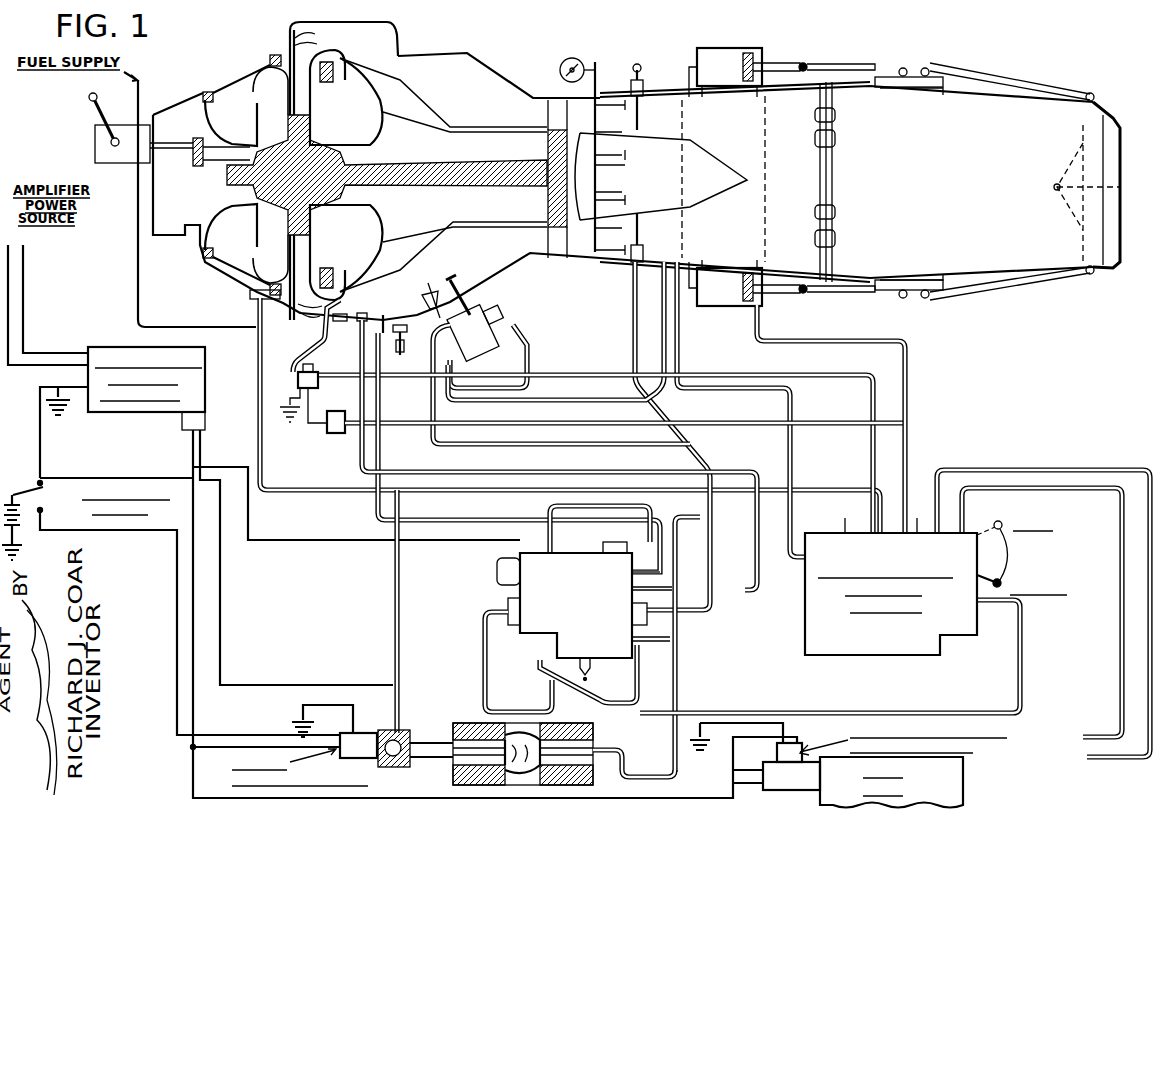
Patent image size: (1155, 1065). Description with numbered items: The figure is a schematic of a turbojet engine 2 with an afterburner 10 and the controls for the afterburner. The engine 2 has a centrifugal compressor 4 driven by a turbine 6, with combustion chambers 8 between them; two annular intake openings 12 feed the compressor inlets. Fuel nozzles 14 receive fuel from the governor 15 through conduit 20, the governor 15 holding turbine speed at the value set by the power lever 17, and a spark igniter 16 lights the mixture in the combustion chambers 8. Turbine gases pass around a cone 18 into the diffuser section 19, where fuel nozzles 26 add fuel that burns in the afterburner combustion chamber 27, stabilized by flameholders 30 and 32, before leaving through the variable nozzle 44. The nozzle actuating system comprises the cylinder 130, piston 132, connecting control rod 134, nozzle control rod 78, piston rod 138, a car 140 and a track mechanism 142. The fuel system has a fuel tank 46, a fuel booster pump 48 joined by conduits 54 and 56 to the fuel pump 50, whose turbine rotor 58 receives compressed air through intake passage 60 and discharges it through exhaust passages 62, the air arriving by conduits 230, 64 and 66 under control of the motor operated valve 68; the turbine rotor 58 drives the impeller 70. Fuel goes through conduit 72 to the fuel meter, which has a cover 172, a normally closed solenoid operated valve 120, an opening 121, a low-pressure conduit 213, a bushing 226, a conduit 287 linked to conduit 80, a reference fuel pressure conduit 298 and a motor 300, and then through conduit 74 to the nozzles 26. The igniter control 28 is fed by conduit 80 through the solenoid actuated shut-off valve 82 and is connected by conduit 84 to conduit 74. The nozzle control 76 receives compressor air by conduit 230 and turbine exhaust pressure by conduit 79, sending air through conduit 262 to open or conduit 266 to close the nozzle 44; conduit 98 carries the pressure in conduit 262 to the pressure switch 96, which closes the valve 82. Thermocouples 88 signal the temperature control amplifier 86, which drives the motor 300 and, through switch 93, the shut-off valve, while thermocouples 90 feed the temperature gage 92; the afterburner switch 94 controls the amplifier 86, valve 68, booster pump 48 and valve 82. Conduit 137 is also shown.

The turbojet engine 2 is at (143, 234).
The compressor 4 is at (240, 180).
The turbine 6 is at (546, 150).
The combustion chambers 8 is at (470, 55).
The afterburner 10 is at (662, 87).
The annular intake openings 12 is at (235, 72).
The fuel nozzles 14 is at (350, 297).
The governor 15 is at (97, 145).
The spark igniter 16 is at (432, 290).
The power lever 17 is at (95, 113).
The cone 18 is at (715, 150).
The diffuser section 19 is at (720, 214).
The conduit 20 is at (137, 270).
The fuel nozzles 26 is at (644, 100).
The afterburner combustion chamber 27 is at (925, 175).
The igniter control 28 is at (495, 305).
The flameholder 30 is at (838, 116).
The flameholder 32 is at (838, 140).
The variable nozzle 44 is at (1126, 208).
The fuel tank 46 is at (965, 778).
The fuel booster pump 48 is at (795, 748).
The fuel pump 50 is at (450, 722).
The conduit 54 is at (718, 778).
The conduit 56 is at (622, 775).
The turbine rotor 58 is at (455, 783).
The intake passage 60 is at (455, 765).
The exhaust passages 62 is at (485, 722).
The conduit 64 is at (395, 660).
The conduit 66 is at (452, 740).
The motor operated valve 68 is at (358, 733).
The impeller 70 is at (598, 745).
The conduit 72 is at (484, 620).
The conduit 74 is at (632, 297).
The nozzle control 76 is at (953, 652).
The nozzle control rod 78 is at (1005, 78).
The conduit 79 is at (660, 323).
The conduit 80 is at (312, 345).
The solenoid actuated shut-off valve 82 is at (320, 388).
The conduit 84 is at (670, 447).
The temperature control amplifier 86 is at (116, 339).
The thermocouples 88 is at (626, 155).
The thermocouples 90 is at (600, 78).
The temperature gage 92 is at (595, 58).
The switch 93 is at (183, 420).
The afterburner switch 94 is at (36, 480).
The pressure switch 96 is at (330, 431).
The conduit 98 is at (414, 420).
The solenoid operated valve 120 is at (630, 614).
The opening 121 is at (538, 648).
The cylinder 130 is at (722, 48).
The piston 132 is at (795, 55).
The connecting control rod 134 is at (880, 77).
The fuel line 137 is at (545, 530).
The piston rod 138 is at (825, 64).
The car 140 is at (926, 66).
The track mechanism 142 is at (942, 98).
The cover 172 is at (496, 575).
The conduit 213 is at (672, 640).
The bushing 226 is at (592, 668).
The conduit 230 is at (258, 345).
The conduit 262 is at (907, 370).
The conduit 266 is at (870, 388).
The conduit 287 is at (630, 571).
The reference fuel pressure conduit 298 is at (630, 594).
The motor 300 is at (627, 545).